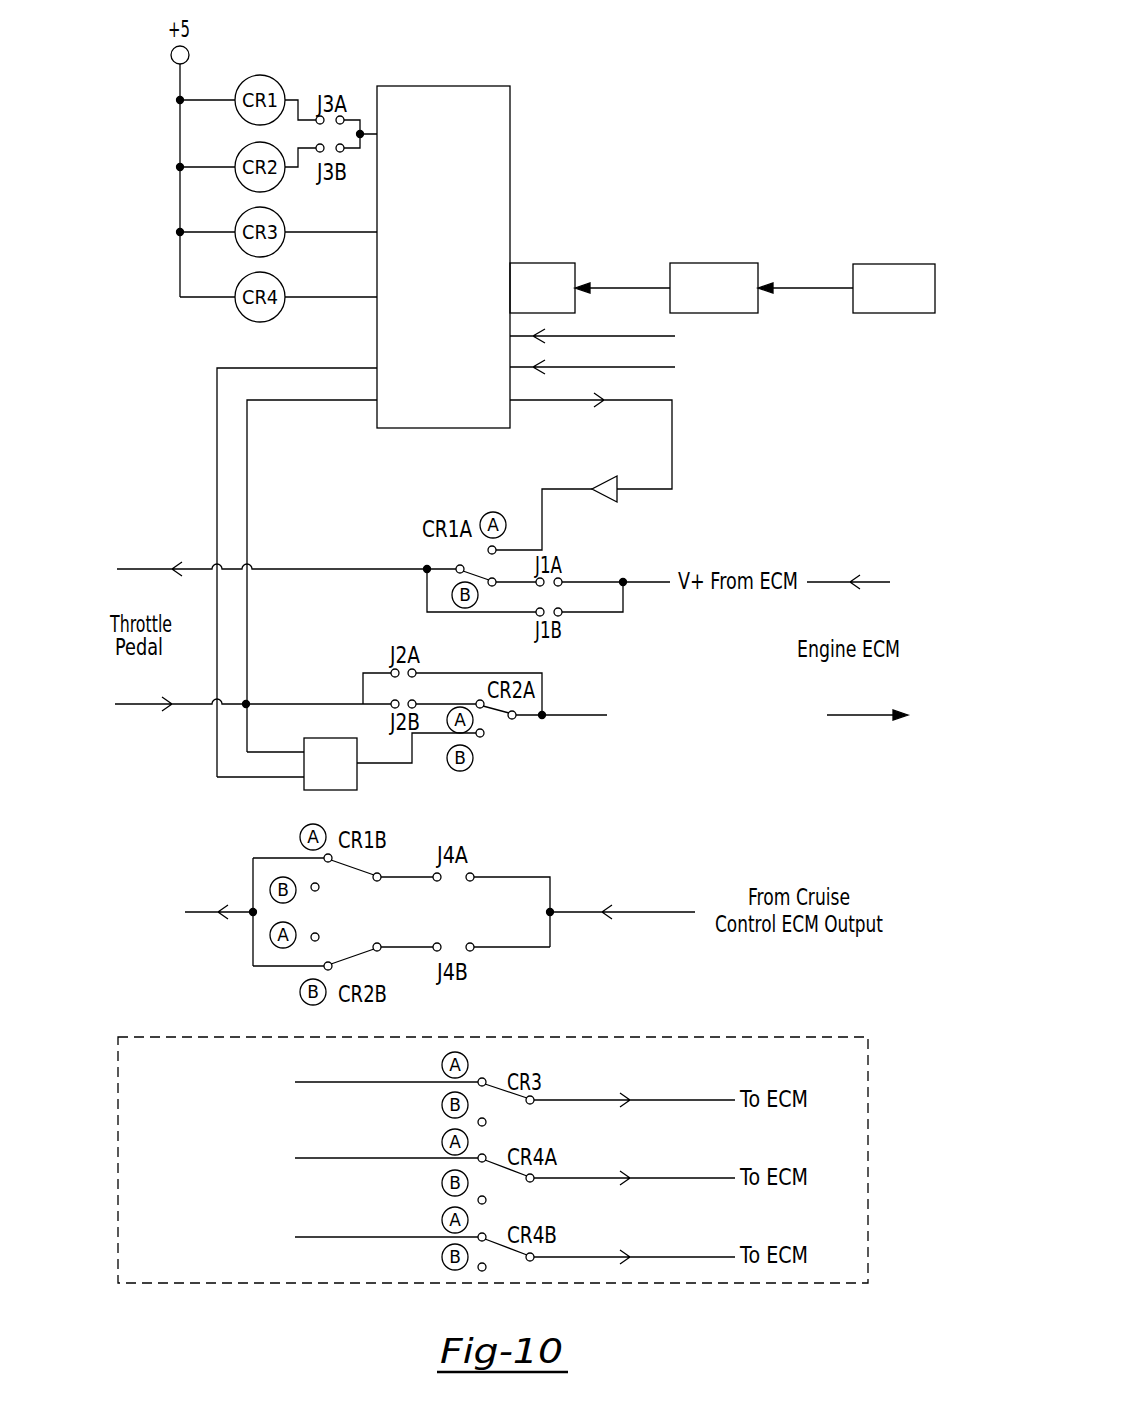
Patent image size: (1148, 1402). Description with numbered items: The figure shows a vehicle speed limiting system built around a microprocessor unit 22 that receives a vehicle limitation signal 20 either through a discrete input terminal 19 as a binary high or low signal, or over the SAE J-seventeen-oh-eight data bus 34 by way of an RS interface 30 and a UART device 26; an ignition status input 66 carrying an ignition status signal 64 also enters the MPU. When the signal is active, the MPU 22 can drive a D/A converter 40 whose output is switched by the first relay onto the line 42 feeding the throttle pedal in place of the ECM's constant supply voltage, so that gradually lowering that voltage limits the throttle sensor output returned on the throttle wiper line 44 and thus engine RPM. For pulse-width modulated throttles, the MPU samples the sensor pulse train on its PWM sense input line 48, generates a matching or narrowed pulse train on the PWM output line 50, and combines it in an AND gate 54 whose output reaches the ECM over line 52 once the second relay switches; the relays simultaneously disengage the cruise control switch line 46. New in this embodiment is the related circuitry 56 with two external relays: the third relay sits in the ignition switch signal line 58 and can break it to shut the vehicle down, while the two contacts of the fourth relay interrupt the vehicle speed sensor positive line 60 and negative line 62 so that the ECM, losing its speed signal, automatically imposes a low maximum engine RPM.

The microprocessor unit (MPU) 22 is at (477, 86).
The UART device 26 is at (542, 263).
The RS 485 interface 30 is at (717, 263).
The SAE J1708 data bus 34 is at (897, 264).
The ignition status input 66 is at (597, 336).
The ignition status signal 64 is at (828, 349).
The discrete input terminal 19 is at (550, 367).
The vehicle limitation signal 20 is at (799, 406).
The PWM output line 50 is at (233, 367).
The PWM sense input line 48 is at (249, 400).
The D/A converter 40 is at (617, 497).
The line to throttle pedal 42 is at (305, 572).
The throttle wiper line 44 is at (250, 706).
The ECM throttle input line 52 is at (850, 716).
The AND gate 54 is at (357, 775).
The cruise control switch line 46 is at (233, 908).
The related circuitry 56 is at (770, 1037).
The ignition switch signal line 58 is at (333, 1081).
The vehicle speed sensor + line 60 is at (323, 1158).
The vehicle speed sensor - line 62 is at (323, 1237).